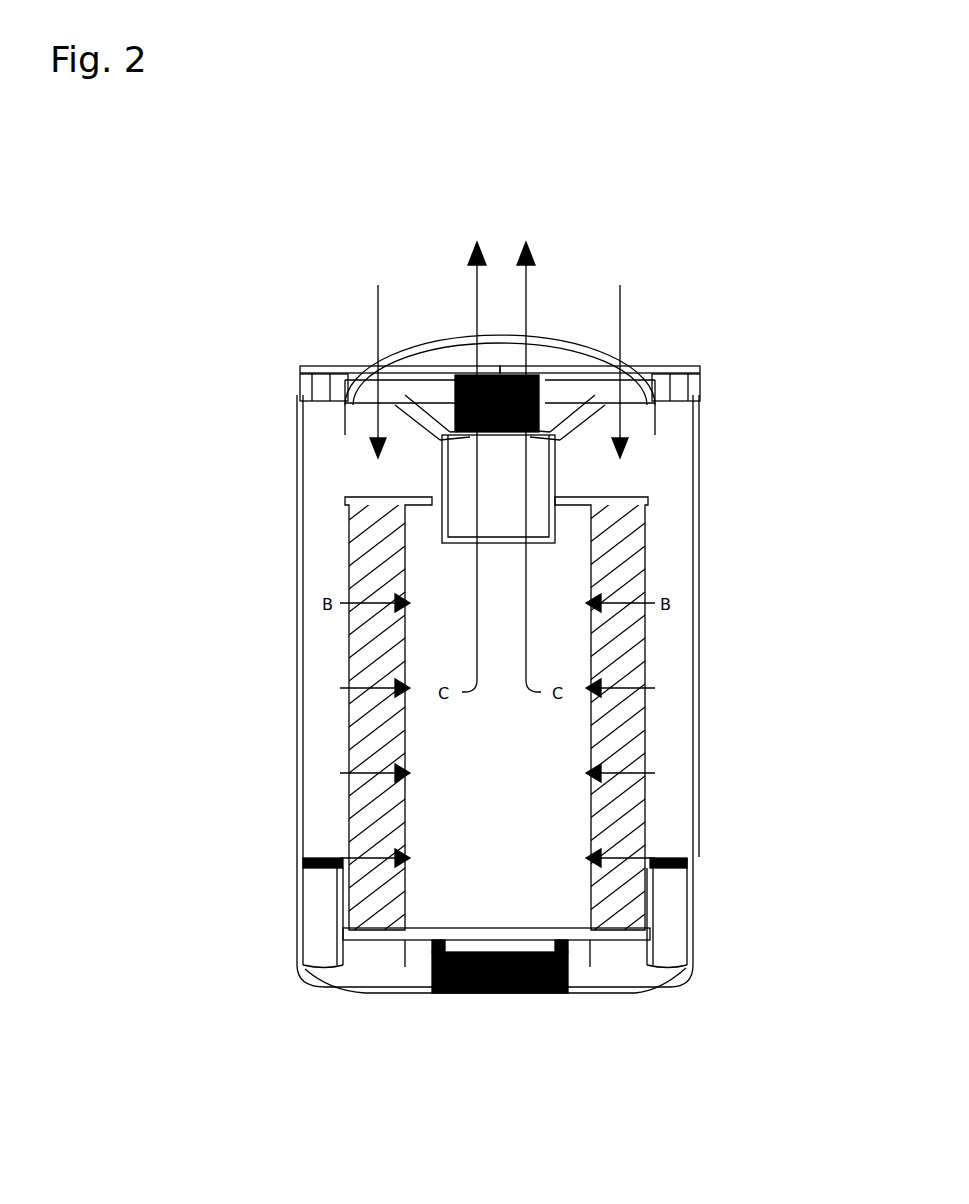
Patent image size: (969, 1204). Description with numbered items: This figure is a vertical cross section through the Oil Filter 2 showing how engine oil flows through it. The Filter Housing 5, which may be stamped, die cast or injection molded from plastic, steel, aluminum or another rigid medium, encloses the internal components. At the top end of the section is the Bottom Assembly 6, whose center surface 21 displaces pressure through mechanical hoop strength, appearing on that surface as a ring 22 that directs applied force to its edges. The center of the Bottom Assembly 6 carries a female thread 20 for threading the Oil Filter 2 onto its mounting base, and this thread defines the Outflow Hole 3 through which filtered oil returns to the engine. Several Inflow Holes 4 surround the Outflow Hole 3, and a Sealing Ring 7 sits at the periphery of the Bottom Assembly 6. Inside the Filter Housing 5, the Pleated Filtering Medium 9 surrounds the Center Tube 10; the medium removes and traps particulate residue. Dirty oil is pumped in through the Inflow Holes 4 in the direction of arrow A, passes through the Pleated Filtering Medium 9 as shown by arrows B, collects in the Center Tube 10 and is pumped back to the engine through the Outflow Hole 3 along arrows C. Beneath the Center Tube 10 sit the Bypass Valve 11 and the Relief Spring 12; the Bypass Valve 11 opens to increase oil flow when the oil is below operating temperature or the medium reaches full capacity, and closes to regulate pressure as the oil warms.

The Oil Filter 2 is at (260, 653).
The Outflow Hole 3 is at (537, 466).
The Inflow Hole 4 is at (375, 443).
The Filter Housing 5 is at (698, 716).
The Bottom Assembly 6 is at (375, 357).
The Sealing Ring 7 is at (662, 368).
The Pleated Filtering Medium 9 is at (645, 620).
The Center Tube 10 is at (425, 768).
The Bypass Valve 11 is at (440, 990).
The Relief Spring 12 is at (585, 997).
The female thread 20 is at (465, 360).
The center surface 21 is at (582, 340).
The ring 22 is at (330, 425).